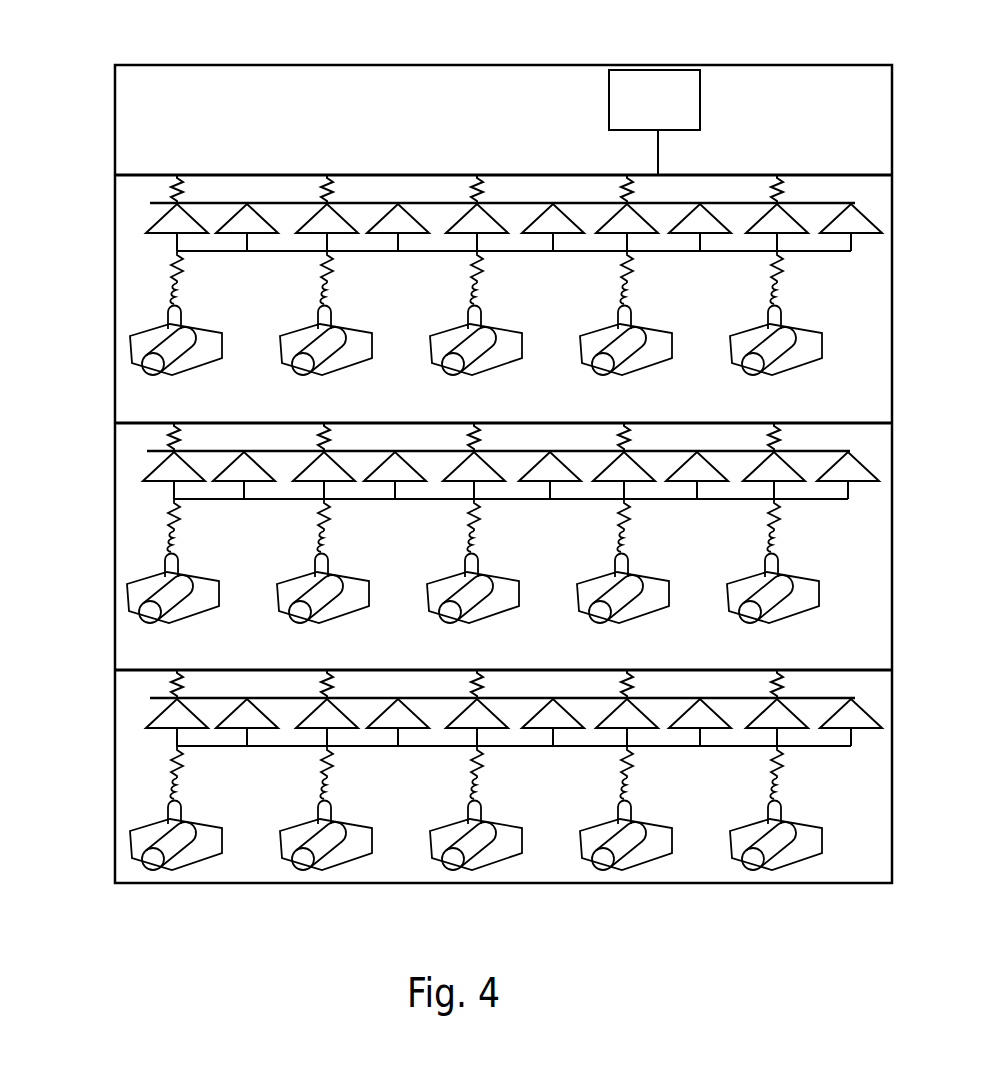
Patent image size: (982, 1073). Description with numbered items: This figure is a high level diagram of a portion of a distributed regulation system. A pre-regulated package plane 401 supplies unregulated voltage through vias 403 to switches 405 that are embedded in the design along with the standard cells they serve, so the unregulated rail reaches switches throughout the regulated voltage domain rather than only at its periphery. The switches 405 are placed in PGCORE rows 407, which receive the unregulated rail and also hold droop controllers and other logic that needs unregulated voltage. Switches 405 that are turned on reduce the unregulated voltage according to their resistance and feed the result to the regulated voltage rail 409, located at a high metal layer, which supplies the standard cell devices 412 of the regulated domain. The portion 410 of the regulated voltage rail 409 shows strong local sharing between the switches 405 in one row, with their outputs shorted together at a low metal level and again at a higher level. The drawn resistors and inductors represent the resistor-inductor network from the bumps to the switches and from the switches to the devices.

The pre-regulated package plane 401 is at (155, 65).
The standard cell devices 412 is at (686, 70).
The regulated voltage rail 409 is at (842, 175).
The portion of rail 410 is at (829, 206).
The rows 407 is at (117, 197).
The switches 405 is at (155, 729).
The vias 403 is at (175, 858).